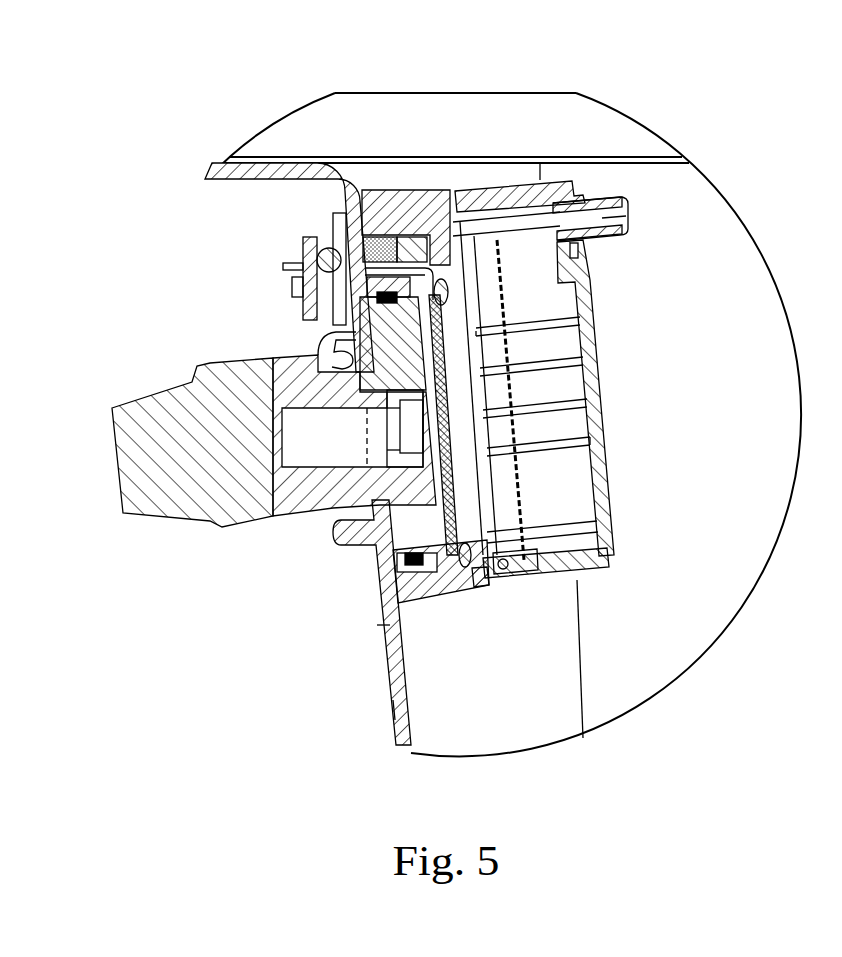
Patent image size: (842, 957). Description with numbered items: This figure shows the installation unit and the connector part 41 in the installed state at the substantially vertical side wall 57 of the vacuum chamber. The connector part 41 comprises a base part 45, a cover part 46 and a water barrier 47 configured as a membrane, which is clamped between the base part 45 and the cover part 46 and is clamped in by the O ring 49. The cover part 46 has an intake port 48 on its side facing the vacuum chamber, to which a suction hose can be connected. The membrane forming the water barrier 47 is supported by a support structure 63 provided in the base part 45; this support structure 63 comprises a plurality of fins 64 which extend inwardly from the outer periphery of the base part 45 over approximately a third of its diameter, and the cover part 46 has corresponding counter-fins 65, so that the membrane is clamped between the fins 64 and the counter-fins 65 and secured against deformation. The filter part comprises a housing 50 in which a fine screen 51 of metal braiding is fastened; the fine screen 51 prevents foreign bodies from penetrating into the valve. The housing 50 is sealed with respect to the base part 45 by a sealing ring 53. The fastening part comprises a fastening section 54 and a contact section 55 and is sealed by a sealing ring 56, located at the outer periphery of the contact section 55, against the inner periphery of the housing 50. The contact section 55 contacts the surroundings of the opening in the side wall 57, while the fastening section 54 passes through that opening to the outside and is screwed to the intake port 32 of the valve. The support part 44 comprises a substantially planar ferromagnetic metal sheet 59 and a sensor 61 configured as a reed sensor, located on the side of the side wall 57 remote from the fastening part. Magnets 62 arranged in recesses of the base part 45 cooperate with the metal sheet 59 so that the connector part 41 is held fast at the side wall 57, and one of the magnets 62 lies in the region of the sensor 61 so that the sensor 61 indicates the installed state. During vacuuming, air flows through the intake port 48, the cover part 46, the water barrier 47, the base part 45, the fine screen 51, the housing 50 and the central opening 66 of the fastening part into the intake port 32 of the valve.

The connector part 41 is at (532, 122).
The intake port of the valve 32 is at (157, 513).
The support part 44 is at (341, 675).
The base part 45 is at (470, 575).
The cover part 46 is at (548, 183).
The water barrier 47 is at (600, 510).
The intake port 48 is at (628, 214).
The O ring 49 is at (507, 577).
The housing 50 is at (438, 578).
The fine screen 51 is at (455, 498).
The sealing ring 53 is at (470, 568).
The fastening section 54 is at (335, 485).
The contact section 55 is at (370, 565).
The sealing ring 56 is at (412, 585).
The side wall 57 is at (393, 717).
The metal sheet 59 is at (372, 625).
The sensor 61 is at (245, 272).
The magnets 62 is at (383, 245).
The support structure 63 is at (476, 298).
The fins 64 is at (487, 443).
The counter-fins 65 is at (570, 342).
The central opening 66 is at (293, 462).